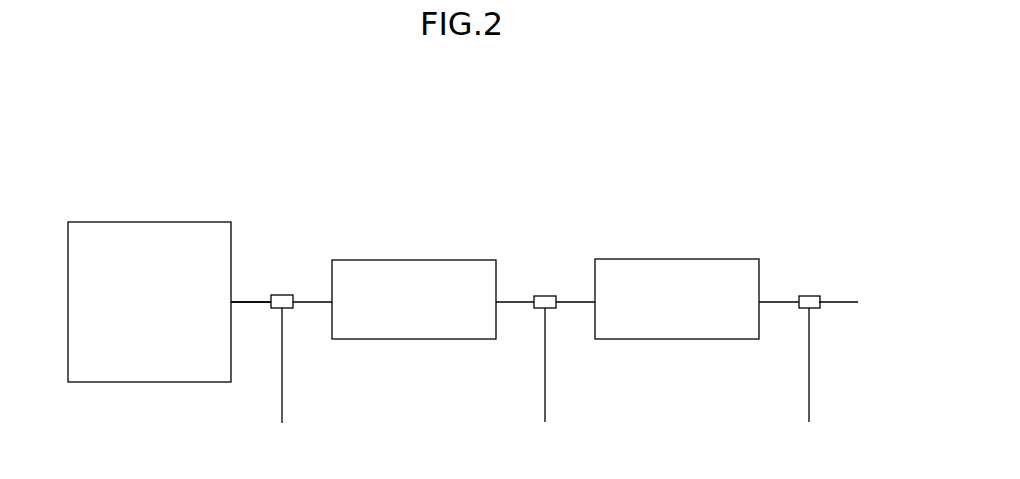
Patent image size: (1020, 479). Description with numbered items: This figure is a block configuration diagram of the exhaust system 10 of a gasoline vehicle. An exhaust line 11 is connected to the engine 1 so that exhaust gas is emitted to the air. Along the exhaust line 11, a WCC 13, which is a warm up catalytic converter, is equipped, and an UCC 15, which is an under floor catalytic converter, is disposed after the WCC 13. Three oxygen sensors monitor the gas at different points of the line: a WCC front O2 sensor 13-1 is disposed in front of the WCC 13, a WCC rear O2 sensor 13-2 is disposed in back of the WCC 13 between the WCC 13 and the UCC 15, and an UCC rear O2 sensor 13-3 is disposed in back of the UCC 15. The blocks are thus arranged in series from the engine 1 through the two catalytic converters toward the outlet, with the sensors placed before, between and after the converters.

The engine 1 is at (148, 222).
The exhaust system 10 is at (755, 188).
The exhaust line 11 is at (250, 300).
The WCC 13 is at (412, 260).
The UCC 15 is at (677, 259).
The WCC front O2 sensor 13-1 is at (278, 376).
The WCC rear O2 sensor 13-2 is at (543, 376).
The UCC rear O2 sensor 13-3 is at (808, 376).